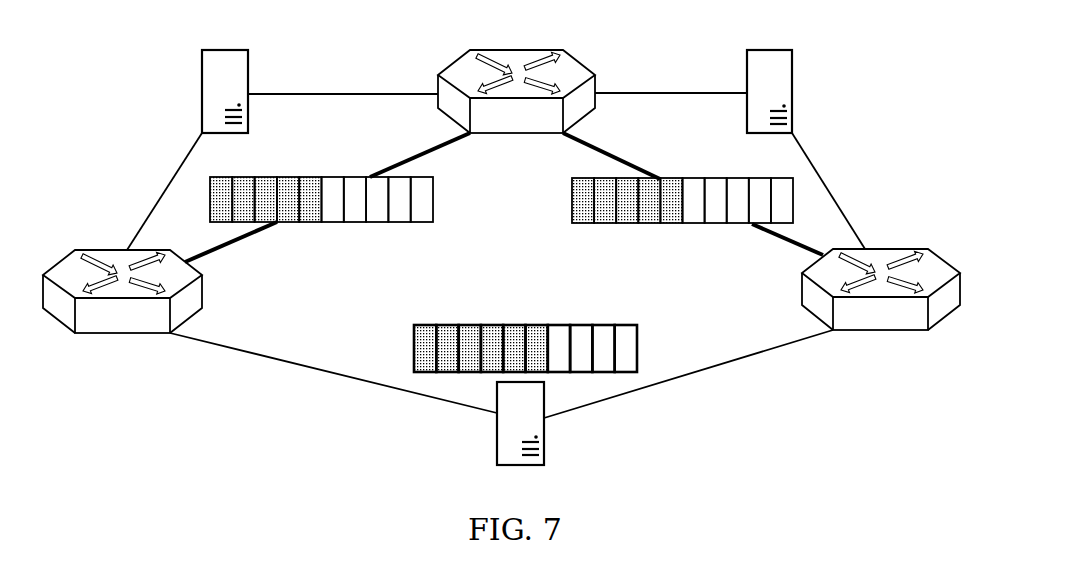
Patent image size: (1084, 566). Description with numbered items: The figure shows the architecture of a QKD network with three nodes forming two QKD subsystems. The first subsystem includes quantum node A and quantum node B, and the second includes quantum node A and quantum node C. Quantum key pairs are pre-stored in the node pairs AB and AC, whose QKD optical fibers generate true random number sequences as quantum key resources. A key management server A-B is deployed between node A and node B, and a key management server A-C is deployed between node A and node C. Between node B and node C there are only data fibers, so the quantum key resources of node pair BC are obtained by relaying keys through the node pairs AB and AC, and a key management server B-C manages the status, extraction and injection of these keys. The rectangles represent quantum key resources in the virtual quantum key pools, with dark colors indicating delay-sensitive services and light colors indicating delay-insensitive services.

The quantum node A is at (516, 68).
The quantum node B is at (122, 269).
The quantum node C is at (881, 268).
The key management server A-B is at (225, 71).
The key management server A-C is at (799, 91).
The key management server B-C is at (550, 423).